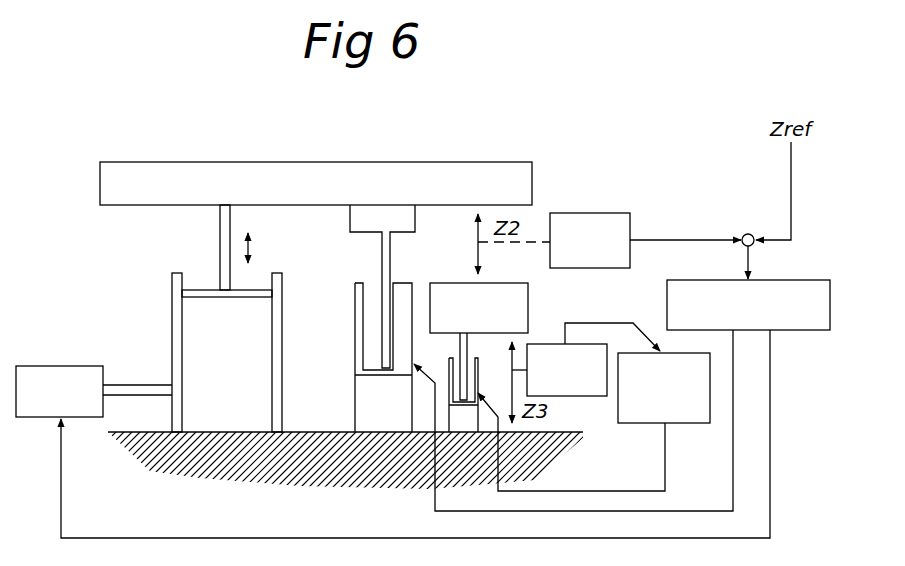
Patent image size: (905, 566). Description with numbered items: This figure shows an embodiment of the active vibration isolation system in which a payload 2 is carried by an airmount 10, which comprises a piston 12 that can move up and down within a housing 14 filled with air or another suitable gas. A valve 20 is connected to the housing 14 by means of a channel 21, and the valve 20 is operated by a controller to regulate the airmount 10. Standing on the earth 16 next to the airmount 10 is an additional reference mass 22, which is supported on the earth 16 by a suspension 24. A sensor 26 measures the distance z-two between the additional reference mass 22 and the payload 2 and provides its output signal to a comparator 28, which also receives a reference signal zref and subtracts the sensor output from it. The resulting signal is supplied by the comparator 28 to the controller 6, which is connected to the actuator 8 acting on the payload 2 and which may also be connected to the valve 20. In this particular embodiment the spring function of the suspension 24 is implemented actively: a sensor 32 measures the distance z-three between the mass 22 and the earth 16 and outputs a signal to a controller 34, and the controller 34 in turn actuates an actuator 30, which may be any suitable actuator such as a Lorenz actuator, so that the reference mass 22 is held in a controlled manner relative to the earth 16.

The payload 2 is at (205, 178).
The controller 6 is at (791, 288).
The actuator 8 is at (398, 262).
The airmount 10 is at (268, 250).
The piston 12 is at (208, 297).
The housing 14 is at (257, 305).
The earth 16 is at (293, 432).
The valve 20 is at (25, 417).
The channel 21 is at (143, 392).
The additional reference mass 22 is at (510, 308).
The suspension 24 is at (682, 431).
The sensor 26 is at (603, 224).
The comparator 28 is at (745, 233).
The actuator 30 is at (452, 364).
The sensor 32 is at (570, 385).
The controller 34 is at (700, 367).